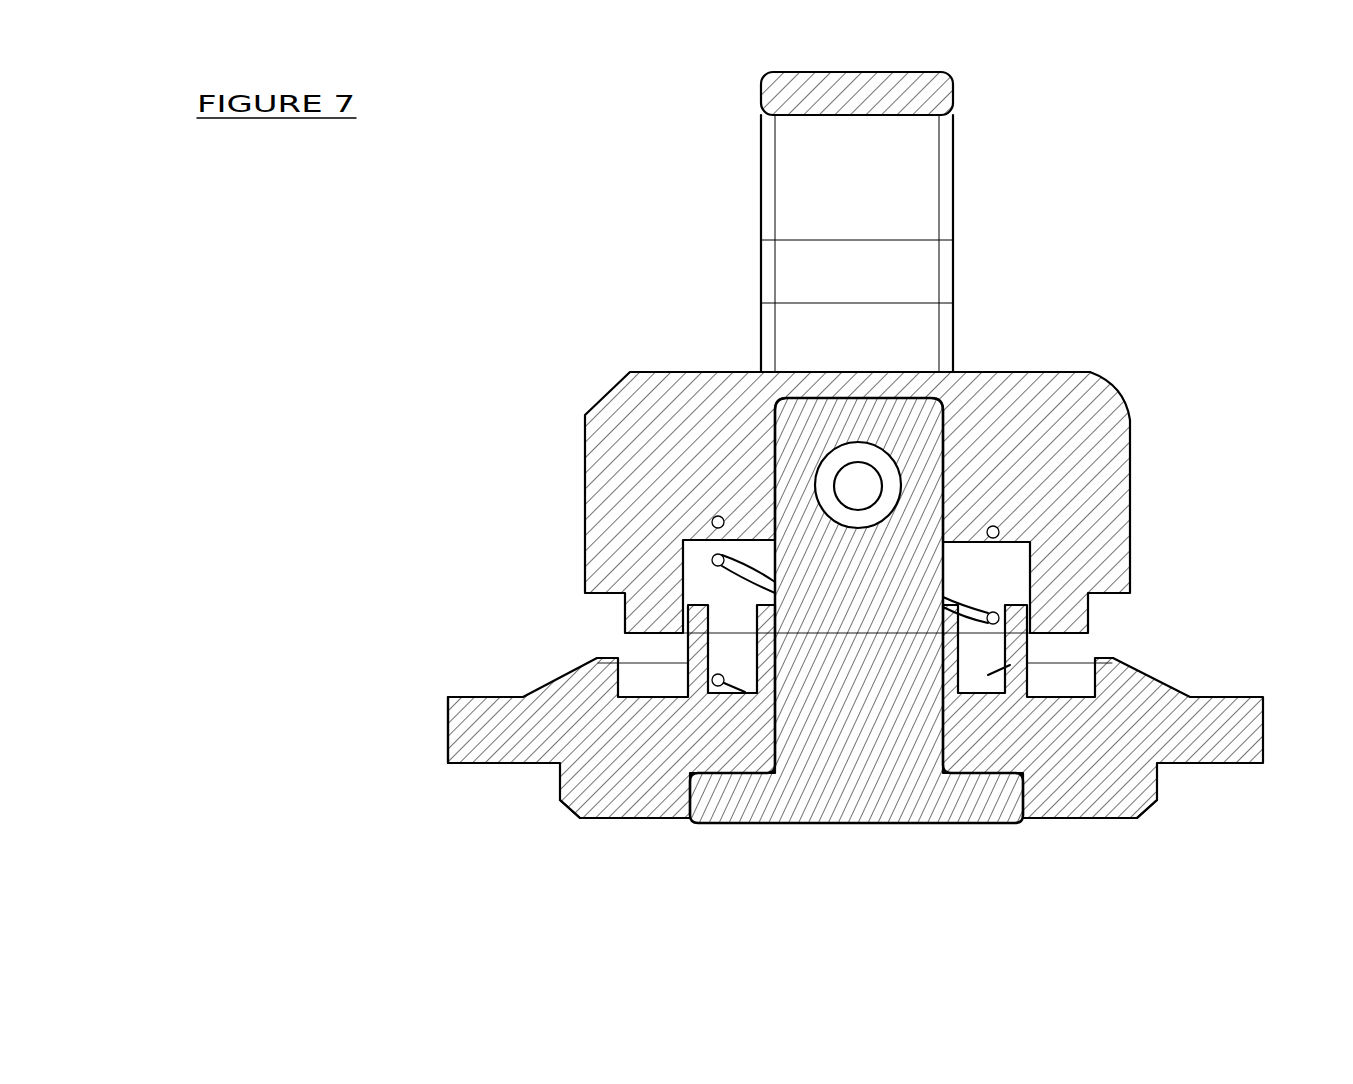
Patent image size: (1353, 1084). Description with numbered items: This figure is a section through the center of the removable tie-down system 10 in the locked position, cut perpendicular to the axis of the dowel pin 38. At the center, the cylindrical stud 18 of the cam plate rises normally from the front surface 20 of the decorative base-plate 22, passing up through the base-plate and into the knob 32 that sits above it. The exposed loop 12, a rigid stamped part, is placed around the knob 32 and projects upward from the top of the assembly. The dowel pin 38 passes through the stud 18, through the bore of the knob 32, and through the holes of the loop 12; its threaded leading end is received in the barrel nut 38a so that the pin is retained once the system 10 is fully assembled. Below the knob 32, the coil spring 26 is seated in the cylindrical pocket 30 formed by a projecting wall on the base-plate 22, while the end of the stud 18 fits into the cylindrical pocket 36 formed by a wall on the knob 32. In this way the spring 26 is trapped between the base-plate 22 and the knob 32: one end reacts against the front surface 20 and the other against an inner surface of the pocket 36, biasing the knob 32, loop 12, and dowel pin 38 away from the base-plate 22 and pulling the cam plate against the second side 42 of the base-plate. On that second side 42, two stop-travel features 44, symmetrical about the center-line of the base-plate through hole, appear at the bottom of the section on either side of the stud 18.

The tie-down system 10 is at (428, 252).
The loop 12 is at (915, 73).
The stud 18 is at (872, 633).
The front surface 20 is at (556, 680).
The base-plate 22 is at (480, 666).
The spring 26 is at (712, 519).
The cylindrical pocket 30 is at (1005, 665).
The knob 32 is at (852, 484).
The cylindrical pocket 36 is at (1020, 568).
The dowel pin 38 is at (858, 482).
The barrel nut 38a is at (822, 449).
The second side 42 is at (493, 763).
The stop-travel features 44 is at (622, 795).